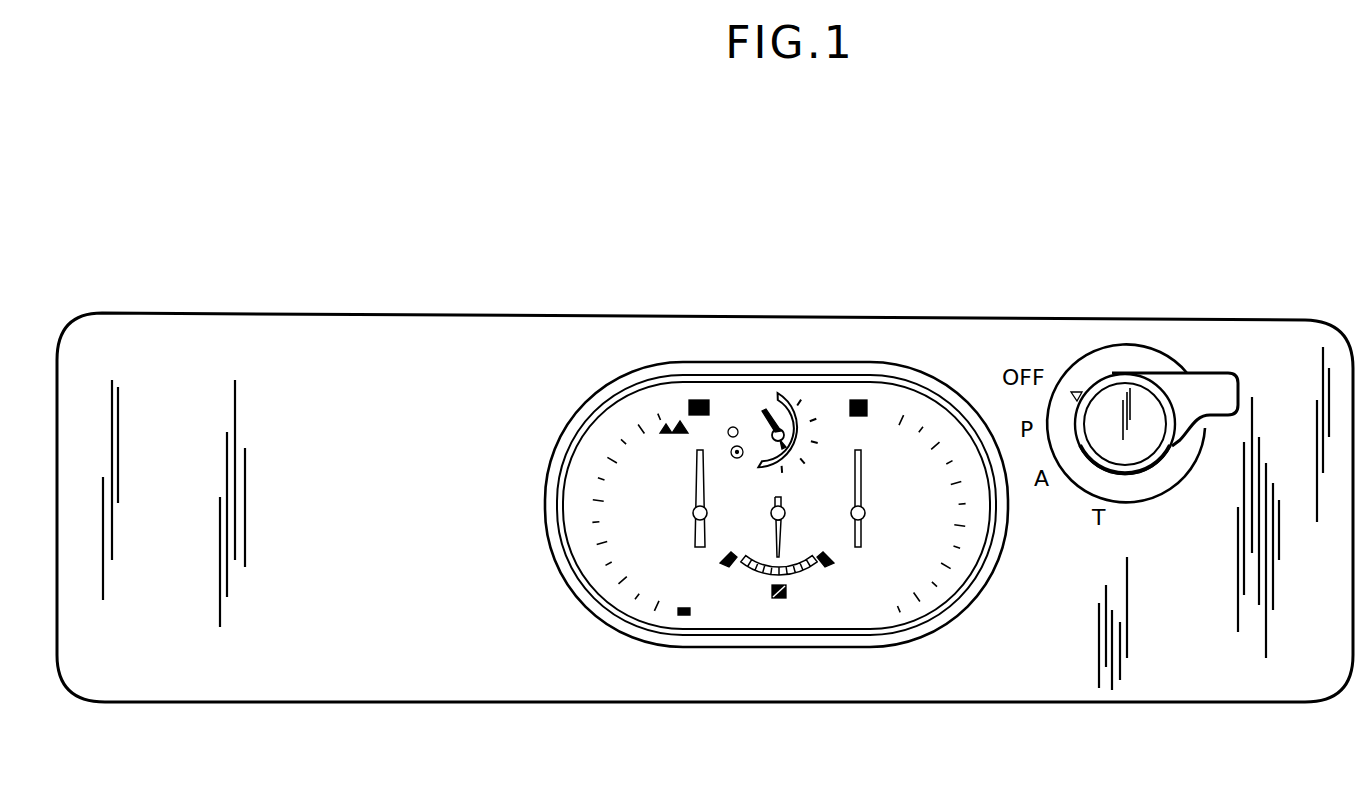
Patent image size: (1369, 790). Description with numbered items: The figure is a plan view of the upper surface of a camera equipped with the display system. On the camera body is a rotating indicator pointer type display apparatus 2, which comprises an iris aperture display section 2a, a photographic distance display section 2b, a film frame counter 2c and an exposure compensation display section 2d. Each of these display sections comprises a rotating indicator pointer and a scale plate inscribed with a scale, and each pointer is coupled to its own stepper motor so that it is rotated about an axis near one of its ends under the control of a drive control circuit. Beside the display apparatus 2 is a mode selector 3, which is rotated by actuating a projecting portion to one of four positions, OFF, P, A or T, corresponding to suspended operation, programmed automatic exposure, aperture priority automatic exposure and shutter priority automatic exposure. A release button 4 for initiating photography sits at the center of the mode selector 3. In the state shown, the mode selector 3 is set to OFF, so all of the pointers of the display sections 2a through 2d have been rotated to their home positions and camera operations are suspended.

The rotating indicator pointer type display apparatus 2 is at (725, 418).
The iris aperture display section 2a is at (910, 598).
The photographic distance display section 2b is at (644, 600).
The film frame counter 2c is at (823, 392).
The exposure compensation display section 2d is at (800, 603).
The mode selector 3 is at (1196, 390).
The release button 4 is at (1122, 410).